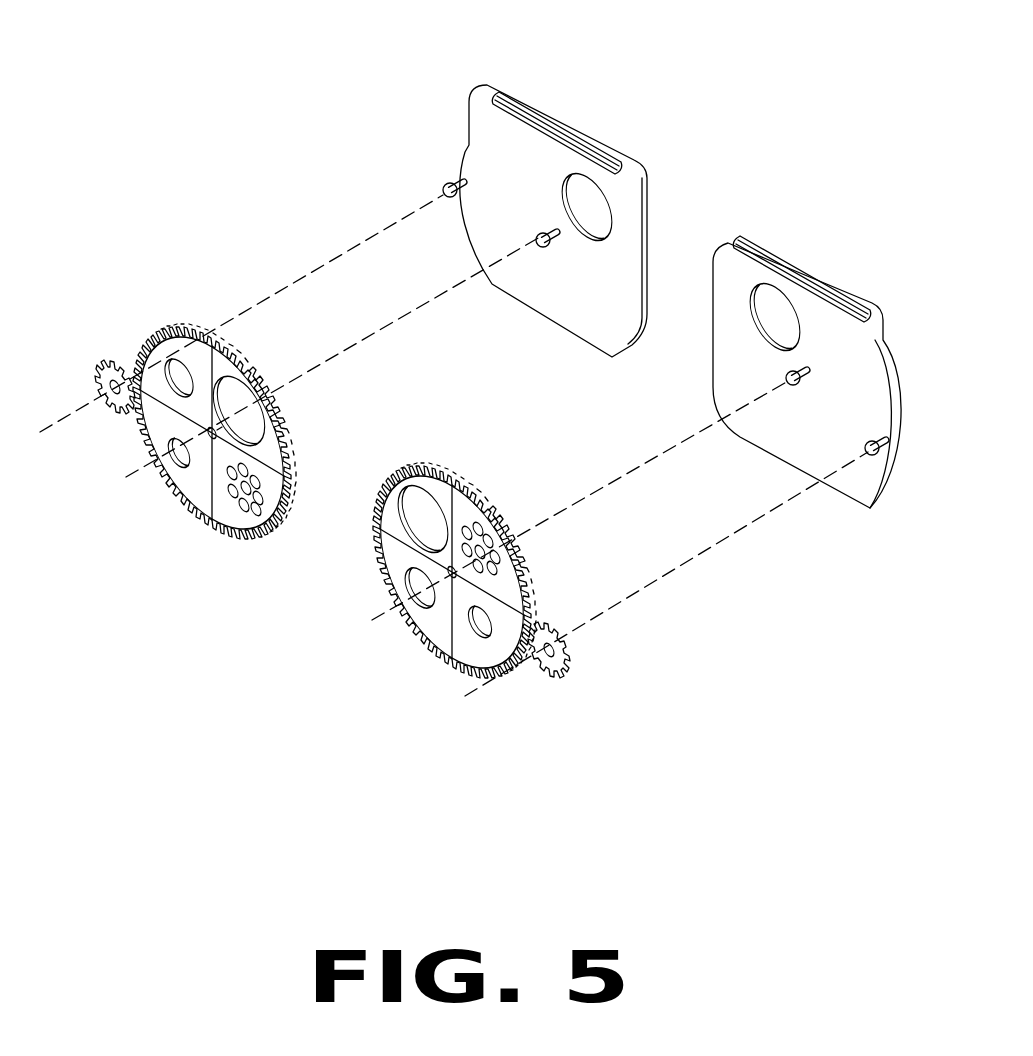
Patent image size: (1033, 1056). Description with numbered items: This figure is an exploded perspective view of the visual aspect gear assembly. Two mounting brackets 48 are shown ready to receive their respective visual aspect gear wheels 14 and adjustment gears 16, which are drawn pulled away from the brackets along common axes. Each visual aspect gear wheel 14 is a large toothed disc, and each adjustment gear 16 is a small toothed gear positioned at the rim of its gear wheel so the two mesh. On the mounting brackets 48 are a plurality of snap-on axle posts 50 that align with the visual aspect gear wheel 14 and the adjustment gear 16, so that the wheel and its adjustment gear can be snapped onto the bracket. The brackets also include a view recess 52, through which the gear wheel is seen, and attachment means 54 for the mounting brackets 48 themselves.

The visual aspect gear wheel 14 is at (205, 495).
The adjustment gear 16 is at (560, 657).
The mounting bracket 48 is at (823, 263).
The snap-on axle post 50 is at (826, 582).
The view recess 52 is at (647, 350).
The attachment means 54 is at (725, 236).